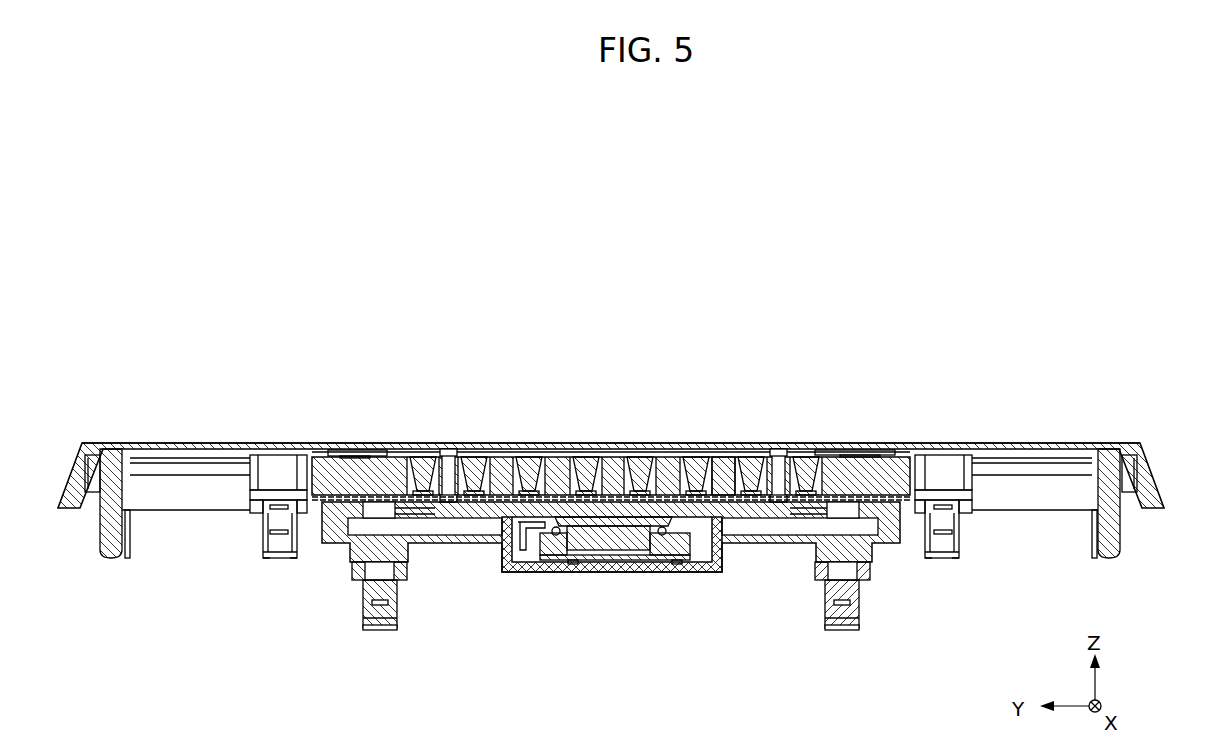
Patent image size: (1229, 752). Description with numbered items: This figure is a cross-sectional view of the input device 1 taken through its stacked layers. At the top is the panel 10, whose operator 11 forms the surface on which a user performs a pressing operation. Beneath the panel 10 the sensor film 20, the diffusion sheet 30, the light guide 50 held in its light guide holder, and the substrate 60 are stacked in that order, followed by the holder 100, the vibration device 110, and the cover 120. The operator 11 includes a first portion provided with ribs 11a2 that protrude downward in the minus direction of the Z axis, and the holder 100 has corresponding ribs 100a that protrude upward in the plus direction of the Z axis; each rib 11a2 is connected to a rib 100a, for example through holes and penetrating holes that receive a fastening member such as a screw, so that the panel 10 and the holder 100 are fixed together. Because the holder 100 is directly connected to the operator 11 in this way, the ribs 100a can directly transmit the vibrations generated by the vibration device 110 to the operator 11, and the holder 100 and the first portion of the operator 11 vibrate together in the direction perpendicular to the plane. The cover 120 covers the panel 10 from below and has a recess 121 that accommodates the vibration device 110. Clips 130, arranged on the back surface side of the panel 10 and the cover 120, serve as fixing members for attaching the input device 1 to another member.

The input device 1 is at (635, 503).
The panel 10 is at (611, 443).
The operator 11 is at (611, 418).
The rib 11a2 is at (780, 455).
The sensor film 20 is at (692, 458).
The diffusion sheet 30 is at (737, 458).
The light guide 50 is at (640, 458).
The substrate 60 is at (611, 443).
The holder 100 is at (460, 505).
The rib 100a is at (820, 452).
The vibration device 110 is at (625, 558).
The cover 120 is at (742, 545).
The recess 121 is at (701, 548).
The clip 130 is at (962, 538).